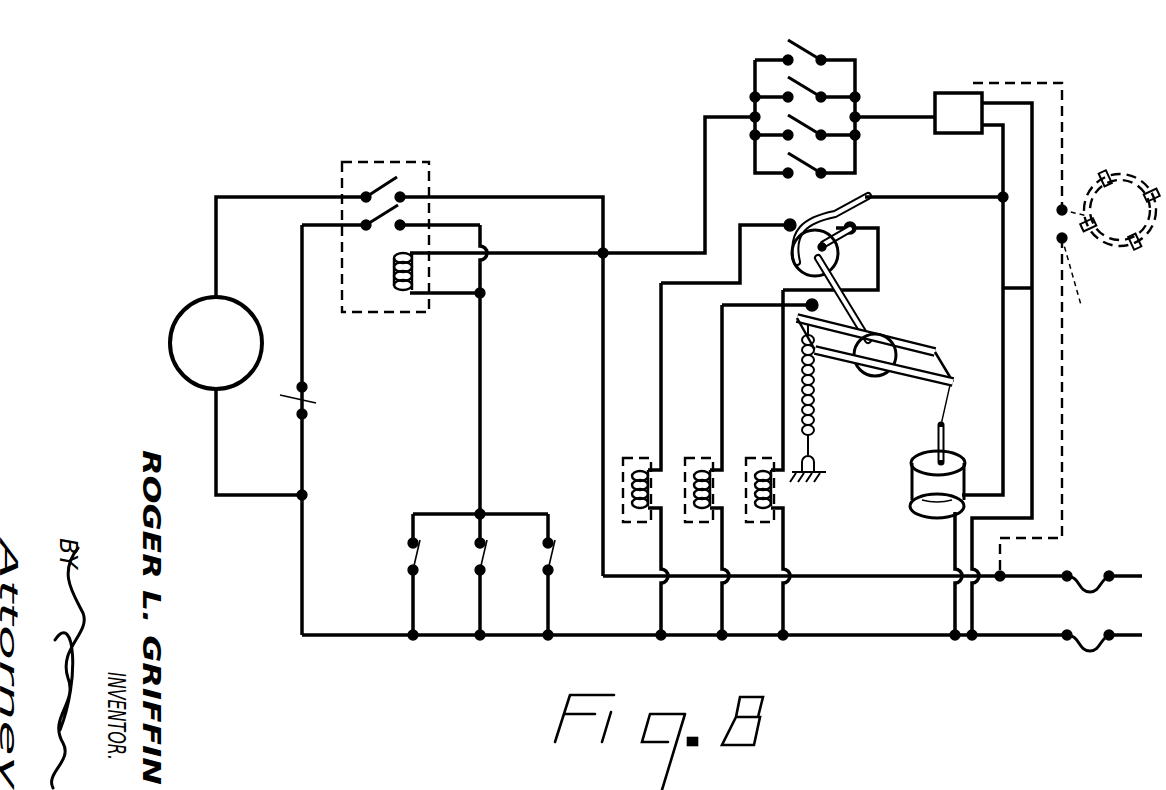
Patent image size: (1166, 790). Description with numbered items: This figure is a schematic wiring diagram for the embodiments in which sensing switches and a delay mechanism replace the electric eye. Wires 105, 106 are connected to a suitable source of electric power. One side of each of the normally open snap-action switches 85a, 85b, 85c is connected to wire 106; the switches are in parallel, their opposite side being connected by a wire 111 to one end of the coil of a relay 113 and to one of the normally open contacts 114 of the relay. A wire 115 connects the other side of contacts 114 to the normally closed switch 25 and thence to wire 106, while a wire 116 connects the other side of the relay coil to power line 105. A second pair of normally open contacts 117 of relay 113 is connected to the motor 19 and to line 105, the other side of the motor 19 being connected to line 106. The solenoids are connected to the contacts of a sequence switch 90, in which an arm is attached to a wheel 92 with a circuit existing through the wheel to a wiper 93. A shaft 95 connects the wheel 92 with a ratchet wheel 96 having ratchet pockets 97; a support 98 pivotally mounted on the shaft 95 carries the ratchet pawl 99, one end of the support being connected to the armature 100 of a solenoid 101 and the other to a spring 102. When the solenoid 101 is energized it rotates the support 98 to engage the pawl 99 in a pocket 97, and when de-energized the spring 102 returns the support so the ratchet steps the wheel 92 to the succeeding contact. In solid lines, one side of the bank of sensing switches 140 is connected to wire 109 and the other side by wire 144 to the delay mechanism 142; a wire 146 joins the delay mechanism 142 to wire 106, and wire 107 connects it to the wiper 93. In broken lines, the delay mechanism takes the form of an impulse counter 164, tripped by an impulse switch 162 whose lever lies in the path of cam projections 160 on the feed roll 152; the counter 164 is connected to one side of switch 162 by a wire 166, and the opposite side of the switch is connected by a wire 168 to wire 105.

The motor 19 is at (176, 364).
The normally closed switch 25 is at (307, 405).
The snap-action switch 85a is at (411, 556).
The snap-action switch 85b is at (479, 556).
The snap-action switch 85c is at (547, 556).
The sequence switch 90 is at (856, 306).
The wheel 92 is at (790, 262).
The wiper 93 is at (858, 188).
The shaft 95 is at (846, 276).
The ratchet wheel 96 is at (886, 330).
The ratchet pockets 97 is at (862, 388).
The support 98 is at (930, 345).
The ratchet pawl 99 is at (810, 380).
The armature 100 is at (948, 426).
The solenoid 101 is at (920, 491).
The spring 102 is at (821, 442).
The wire 105 is at (902, 576).
The wire 106 is at (902, 634).
The wire 107 is at (1002, 251).
The wire 109 is at (705, 155).
The wire 111 is at (482, 367).
The relay 113 is at (416, 157).
The normally open contacts 114 is at (382, 232).
The wire 115 is at (303, 260).
The wire 116 is at (508, 252).
The normally open contacts 117 is at (392, 150).
The sensing switches 140 is at (804, 44).
The delay mechanism 142 is at (985, 52).
The wire 144 is at (884, 70).
The wire 146 is at (999, 289).
The feed roll 152 is at (1135, 160).
The cam projections 160 is at (1108, 247).
The impulse switch 162 is at (1096, 277).
The impulse counter 164 is at (960, 134).
The wire 166 is at (1064, 101).
The wire 168 is at (1062, 405).